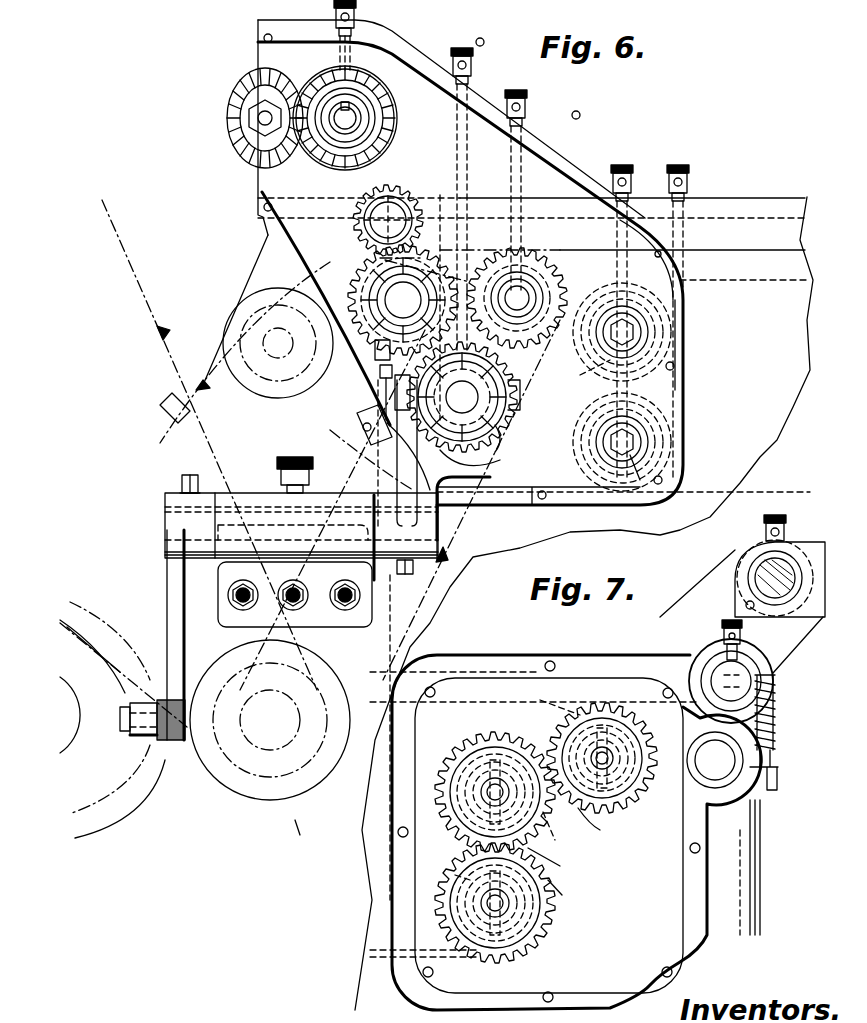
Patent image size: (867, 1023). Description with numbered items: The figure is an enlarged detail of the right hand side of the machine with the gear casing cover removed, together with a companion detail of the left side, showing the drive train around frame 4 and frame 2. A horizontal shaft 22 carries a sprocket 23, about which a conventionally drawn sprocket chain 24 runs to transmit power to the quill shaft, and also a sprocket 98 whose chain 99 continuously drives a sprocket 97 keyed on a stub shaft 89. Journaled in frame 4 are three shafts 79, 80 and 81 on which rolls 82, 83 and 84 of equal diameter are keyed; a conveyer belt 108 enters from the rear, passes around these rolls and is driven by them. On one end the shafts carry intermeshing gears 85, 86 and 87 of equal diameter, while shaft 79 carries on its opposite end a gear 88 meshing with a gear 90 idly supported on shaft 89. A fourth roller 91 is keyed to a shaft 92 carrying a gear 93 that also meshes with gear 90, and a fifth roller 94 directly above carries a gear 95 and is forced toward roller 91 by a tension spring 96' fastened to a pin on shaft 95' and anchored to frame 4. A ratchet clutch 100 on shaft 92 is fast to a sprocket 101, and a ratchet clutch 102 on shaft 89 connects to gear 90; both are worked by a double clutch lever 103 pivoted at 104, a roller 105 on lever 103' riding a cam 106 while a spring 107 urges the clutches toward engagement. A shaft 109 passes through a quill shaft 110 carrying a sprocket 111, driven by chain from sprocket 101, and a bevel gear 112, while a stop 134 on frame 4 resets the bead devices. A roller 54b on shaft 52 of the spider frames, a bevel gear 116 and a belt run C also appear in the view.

In FIG. 6, the frame 2 is at (220, 592).
In FIG. 6, the frame 4 is at (750, 220).
In FIG. 7, the frame 4 is at (372, 1000).
In FIG. 6, the horizontal shaft 22 is at (262, 742).
In FIG. 6, the sprocket 23 is at (285, 668).
In FIG. 6, the sprocket chain 24 is at (150, 318).
In FIG. 6, the shaft 52 is at (275, 343).
In FIG. 6, the roller 54b is at (255, 385).
In FIG. 6, the shaft 79 is at (505, 272).
In FIG. 7, the shaft 79 is at (618, 770).
In FIG. 6, the shaft 80 is at (660, 330).
In FIG. 7, the shaft 80 is at (470, 812).
In FIG. 6, the shaft 81 is at (645, 495).
In FIG. 7, the shaft 81 is at (525, 912).
In FIG. 6, the roll 82 is at (550, 284).
In FIG. 7, the roll 82 is at (560, 697).
In FIG. 6, the roll 83 is at (591, 378).
In FIG. 7, the roll 83 is at (559, 832).
In FIG. 6, the roll 84 is at (660, 432).
In FIG. 7, the roll 84 is at (444, 873).
In FIG. 7, the gear 85 is at (602, 827).
In FIG. 7, the gear 86 is at (558, 864).
In FIG. 7, the gear 87 is at (567, 895).
In FIG. 6, the gear 88 is at (525, 352).
In FIG. 6, the shaft 89 is at (490, 460).
In FIG. 6, the gear 90 is at (520, 388).
In FIG. 6, the fourth roller 91 is at (420, 250).
In FIG. 6, the shaft 92 is at (372, 349).
In FIG. 6, the gear 93 is at (372, 388).
In FIG. 6, the fifth roller 94 is at (395, 195).
In FIG. 6, the gear 95 is at (361, 220).
In FIG. 6, the shaft 95' is at (368, 199).
In FIG. 7, the shaft 95' is at (755, 671).
In FIG. 7, the tension spring 96' is at (786, 732).
In FIG. 6, the sprocket 97 is at (520, 420).
In FIG. 6, the sprocket 98 is at (312, 822).
In FIG. 6, the chain 99 is at (450, 525).
In FIG. 6, the ratchet clutch 100 is at (365, 275).
In FIG. 6, the sprocket 101 is at (445, 290).
In FIG. 6, the ratchet clutch 102 is at (508, 448).
In FIG. 6, the double clutch lever 103 is at (351, 455).
In FIG. 6, the lever 103' is at (149, 635).
In FIG. 6, the pivot 104 is at (170, 522).
In FIG. 6, the roller 105 is at (145, 745).
In FIG. 6, the cam 106 is at (120, 795).
In FIG. 6, the spring 107 is at (395, 395).
In FIG. 6, the conveyer belt 108 is at (712, 493).
In FIG. 7, the conveyer belt 108 is at (515, 700).
In FIG. 6, the shaft 109 is at (358, 112).
In FIG. 7, the shaft 109 is at (782, 562).
In FIG. 6, the quill shaft 110 is at (360, 125).
In FIG. 6, the sprocket 111 is at (395, 140).
In FIG. 6, the bevel gear 112 is at (380, 90).
In FIG. 6, the bevel gear 116 is at (250, 72).
In FIG. 7, the stop 134 is at (818, 615).
In FIG. 6, the belt run C is at (262, 278).